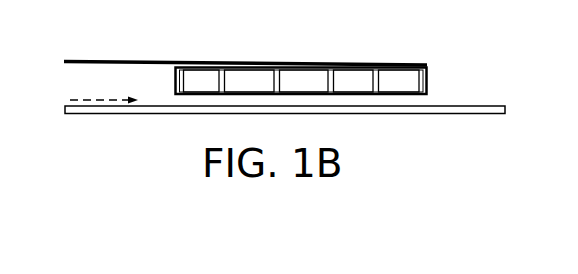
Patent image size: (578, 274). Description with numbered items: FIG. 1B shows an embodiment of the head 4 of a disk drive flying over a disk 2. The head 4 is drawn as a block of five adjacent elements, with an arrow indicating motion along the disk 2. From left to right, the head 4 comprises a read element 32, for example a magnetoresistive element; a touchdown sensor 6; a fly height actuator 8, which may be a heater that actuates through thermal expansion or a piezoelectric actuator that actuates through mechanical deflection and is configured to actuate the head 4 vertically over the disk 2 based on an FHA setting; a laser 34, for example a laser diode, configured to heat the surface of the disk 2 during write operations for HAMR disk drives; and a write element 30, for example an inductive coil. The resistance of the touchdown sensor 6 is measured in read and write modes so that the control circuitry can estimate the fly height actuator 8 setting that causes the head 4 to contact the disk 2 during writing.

The disk 2 is at (513, 104).
The head 4 is at (436, 75).
The read element 32 is at (203, 72).
The touchdown sensor 6 is at (248, 70).
The fly height actuator 8 is at (305, 69).
The laser 34 is at (352, 67).
The write element 30 is at (415, 69).